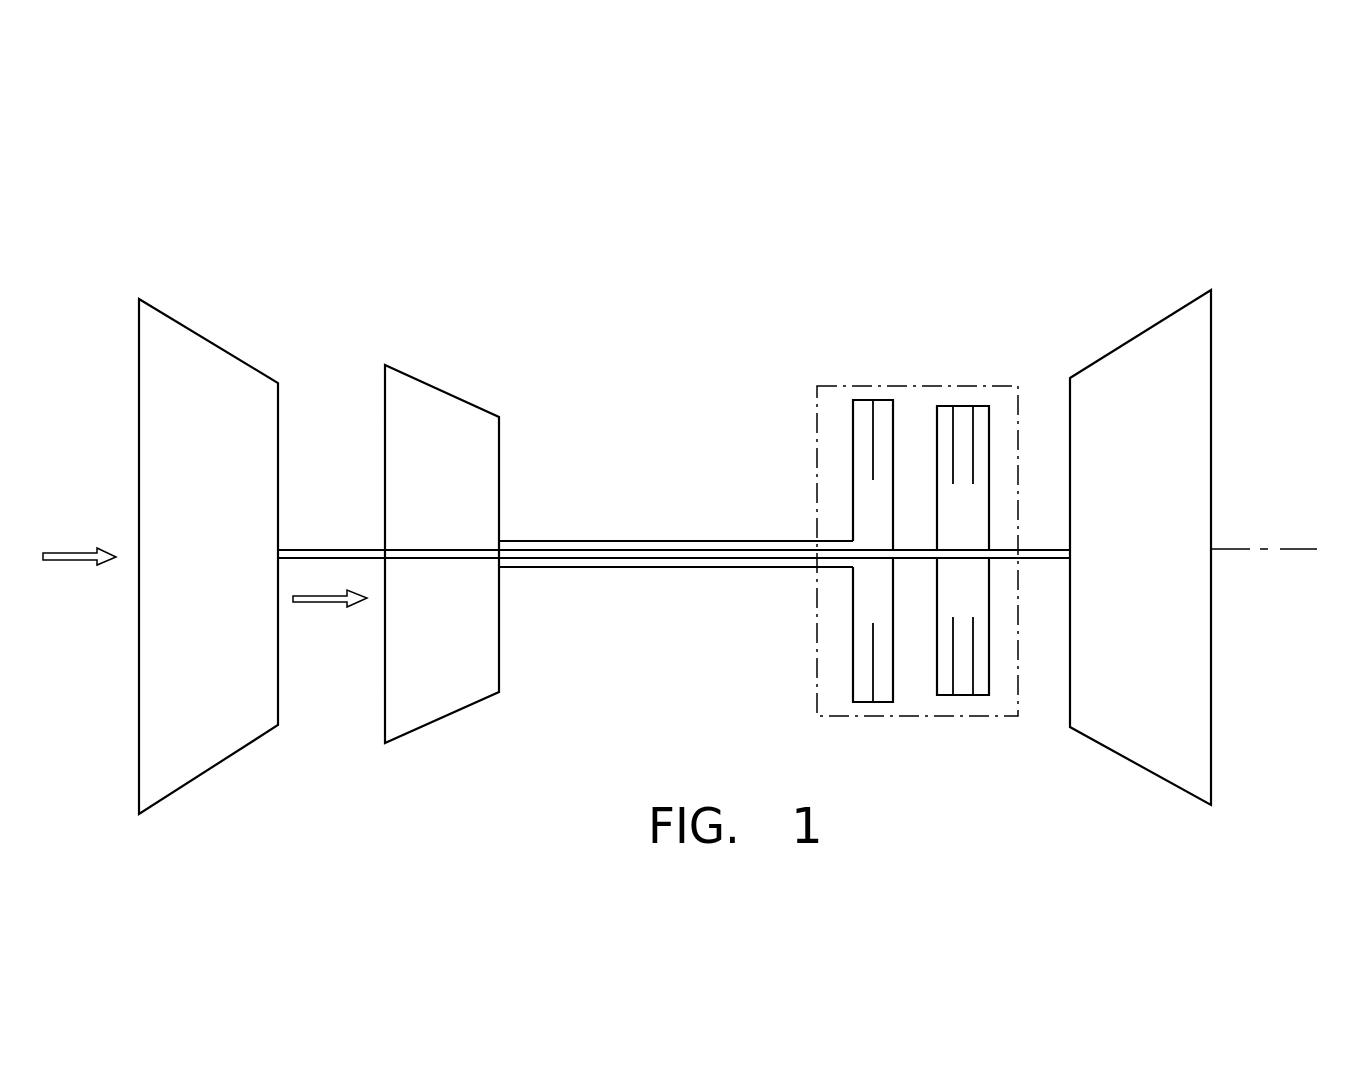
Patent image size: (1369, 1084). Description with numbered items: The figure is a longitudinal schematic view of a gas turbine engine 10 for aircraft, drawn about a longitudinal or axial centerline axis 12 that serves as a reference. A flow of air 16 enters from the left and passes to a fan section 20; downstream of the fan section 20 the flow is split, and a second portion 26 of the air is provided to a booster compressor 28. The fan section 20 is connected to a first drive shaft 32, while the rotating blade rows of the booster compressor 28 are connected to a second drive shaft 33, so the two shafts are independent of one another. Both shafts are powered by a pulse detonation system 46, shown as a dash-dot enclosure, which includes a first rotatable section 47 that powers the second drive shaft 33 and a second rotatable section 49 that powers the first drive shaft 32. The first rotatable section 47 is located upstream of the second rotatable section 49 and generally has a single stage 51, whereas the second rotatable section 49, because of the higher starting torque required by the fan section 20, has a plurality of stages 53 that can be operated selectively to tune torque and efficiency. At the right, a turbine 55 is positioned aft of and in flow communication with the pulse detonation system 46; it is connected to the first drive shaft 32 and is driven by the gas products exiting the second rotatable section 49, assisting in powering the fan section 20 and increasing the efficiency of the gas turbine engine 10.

The gas turbine engine 10 is at (1146, 187).
The longitudinal or axial centerline axis 12 is at (1263, 550).
The flow of air 16 is at (80, 560).
The fan section 20 is at (192, 345).
The second portion of air flow 26 is at (330, 602).
The booster compressor 28 is at (442, 387).
The first drive shaft 32 is at (645, 558).
The second drive shaft 33 is at (620, 540).
The pulse detonation system 46 is at (842, 378).
The first rotatable section 47 is at (853, 452).
The second rotatable section 49 is at (989, 450).
The single stage 51 is at (874, 417).
The stages 53 is at (973, 417).
The turbine 55 is at (1212, 435).